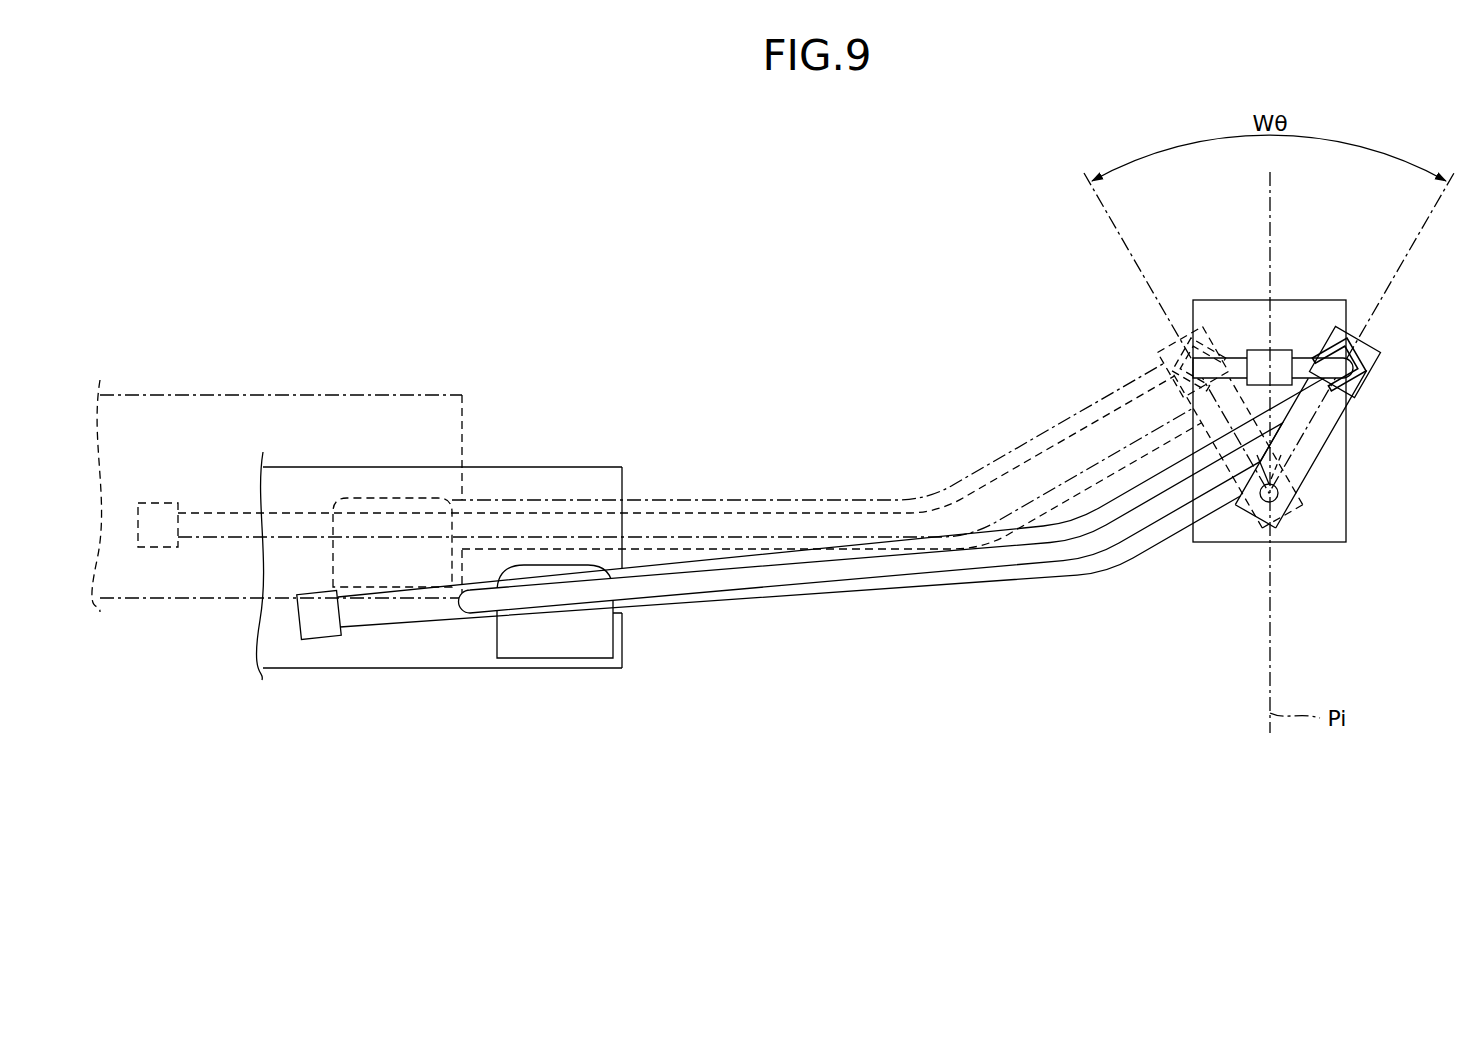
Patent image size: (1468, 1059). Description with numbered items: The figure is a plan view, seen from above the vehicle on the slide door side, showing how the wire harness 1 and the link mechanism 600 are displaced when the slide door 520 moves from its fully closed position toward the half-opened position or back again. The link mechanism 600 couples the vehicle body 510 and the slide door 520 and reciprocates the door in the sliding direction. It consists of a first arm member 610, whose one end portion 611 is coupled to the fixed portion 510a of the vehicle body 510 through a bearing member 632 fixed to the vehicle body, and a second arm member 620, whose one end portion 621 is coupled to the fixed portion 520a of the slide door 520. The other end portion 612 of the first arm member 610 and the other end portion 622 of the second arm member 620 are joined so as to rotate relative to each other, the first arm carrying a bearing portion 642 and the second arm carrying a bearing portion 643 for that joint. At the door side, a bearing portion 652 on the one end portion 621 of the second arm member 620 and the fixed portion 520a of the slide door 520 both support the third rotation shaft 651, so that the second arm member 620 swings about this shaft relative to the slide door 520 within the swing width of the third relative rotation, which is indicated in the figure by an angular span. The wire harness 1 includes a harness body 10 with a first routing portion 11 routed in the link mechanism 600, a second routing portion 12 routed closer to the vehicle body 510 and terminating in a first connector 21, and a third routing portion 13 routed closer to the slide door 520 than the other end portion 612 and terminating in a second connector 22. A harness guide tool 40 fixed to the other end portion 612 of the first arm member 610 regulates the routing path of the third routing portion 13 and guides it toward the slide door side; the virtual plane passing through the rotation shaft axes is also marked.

The wire harness 1 is at (828, 357).
The link mechanism 600 is at (925, 450).
The first arm member 610 is at (727, 468).
The one end portion of the first arm member 611 is at (470, 503).
The other end portion of the first arm member 612 is at (1398, 408).
The second arm member 620 is at (1327, 470).
The one end portion of the second arm member 621 is at (1237, 510).
The other end portion of the second arm member 622 is at (1420, 312).
The bearing member 632 is at (398, 497).
The bearing portion 642 is at (1306, 326).
The bearing portion 643 is at (1293, 284).
The third rotation shaft 651 is at (1279, 500).
The bearing portion 652 is at (1214, 578).
The harness body 10 is at (800, 478).
The first routing portion 11 is at (871, 539).
The second routing portion 12 is at (224, 513).
The third routing portion 13 is at (1236, 358).
The first connector 21 is at (158, 503).
The second connector 22 is at (1272, 350).
The harness guide tool 40 is at (1160, 355).
The vehicle body 510 is at (270, 722).
The fixed portion of the vehicle body 510a is at (355, 529).
The slide door 520 is at (1302, 542).
The fixed portion of the slide door 520a is at (1269, 470).